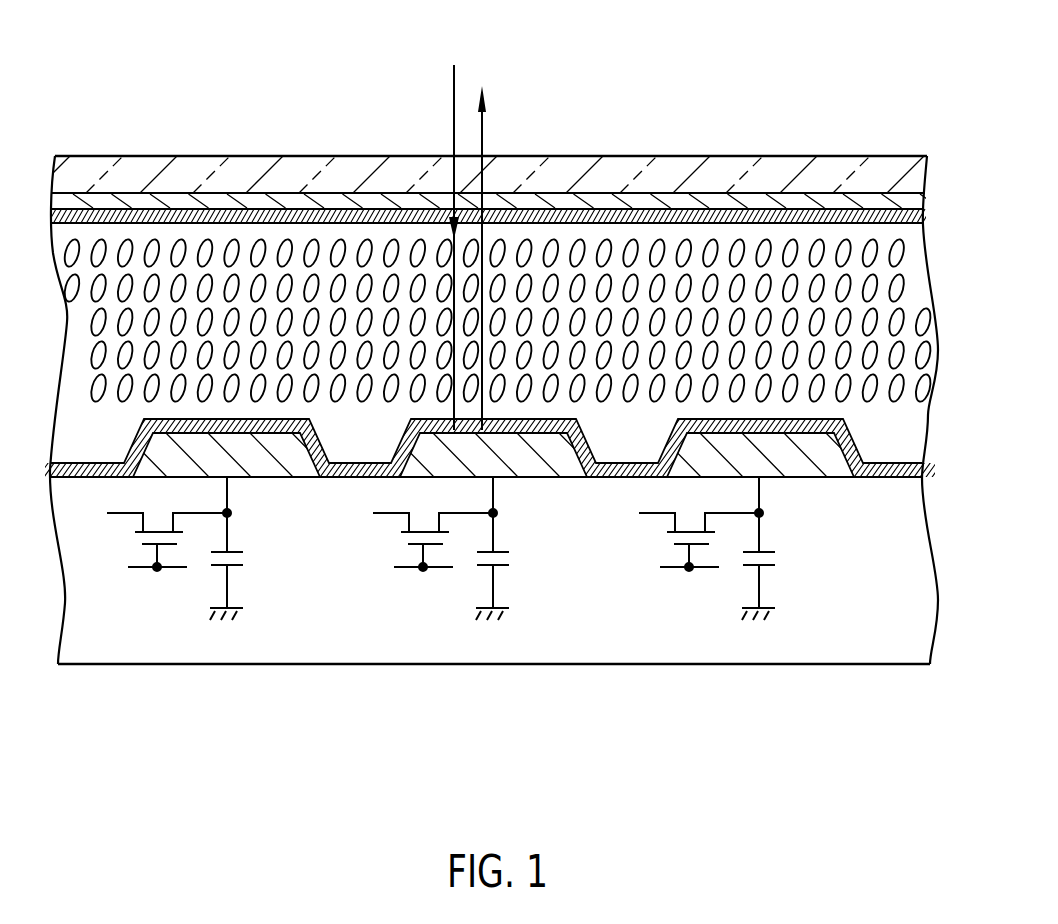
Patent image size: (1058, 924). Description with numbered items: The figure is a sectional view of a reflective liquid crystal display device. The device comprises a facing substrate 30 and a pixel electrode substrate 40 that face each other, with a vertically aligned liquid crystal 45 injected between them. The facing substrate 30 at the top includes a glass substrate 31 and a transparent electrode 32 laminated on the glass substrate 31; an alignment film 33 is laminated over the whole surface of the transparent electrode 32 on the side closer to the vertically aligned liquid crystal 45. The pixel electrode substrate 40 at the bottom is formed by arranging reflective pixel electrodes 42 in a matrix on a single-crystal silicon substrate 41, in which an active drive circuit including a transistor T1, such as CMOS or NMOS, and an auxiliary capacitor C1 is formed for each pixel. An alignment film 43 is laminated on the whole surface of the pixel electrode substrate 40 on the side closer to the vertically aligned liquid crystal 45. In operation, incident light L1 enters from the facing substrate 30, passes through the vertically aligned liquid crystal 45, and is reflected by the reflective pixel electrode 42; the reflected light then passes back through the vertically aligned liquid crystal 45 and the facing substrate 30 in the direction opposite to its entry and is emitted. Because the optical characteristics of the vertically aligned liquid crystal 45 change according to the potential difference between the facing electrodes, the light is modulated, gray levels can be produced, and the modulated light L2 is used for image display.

The facing substrate 30 is at (509, 119).
The glass substrate 31 is at (620, 172).
The transparent electrode 32 is at (763, 203).
The alignment film 33 is at (578, 75).
The pixel electrode substrate 40 is at (499, 610).
The single-crystal silicon substrate 41 is at (486, 609).
The reflective pixel electrode 42 is at (810, 462).
The alignment film 43 is at (873, 478).
The vertically aligned liquid crystal 45 is at (358, 395).
The incident light L1 is at (453, 105).
The modulated light L2 is at (483, 135).
The transistor T1 is at (137, 536).
The capacitor C1 is at (240, 550).